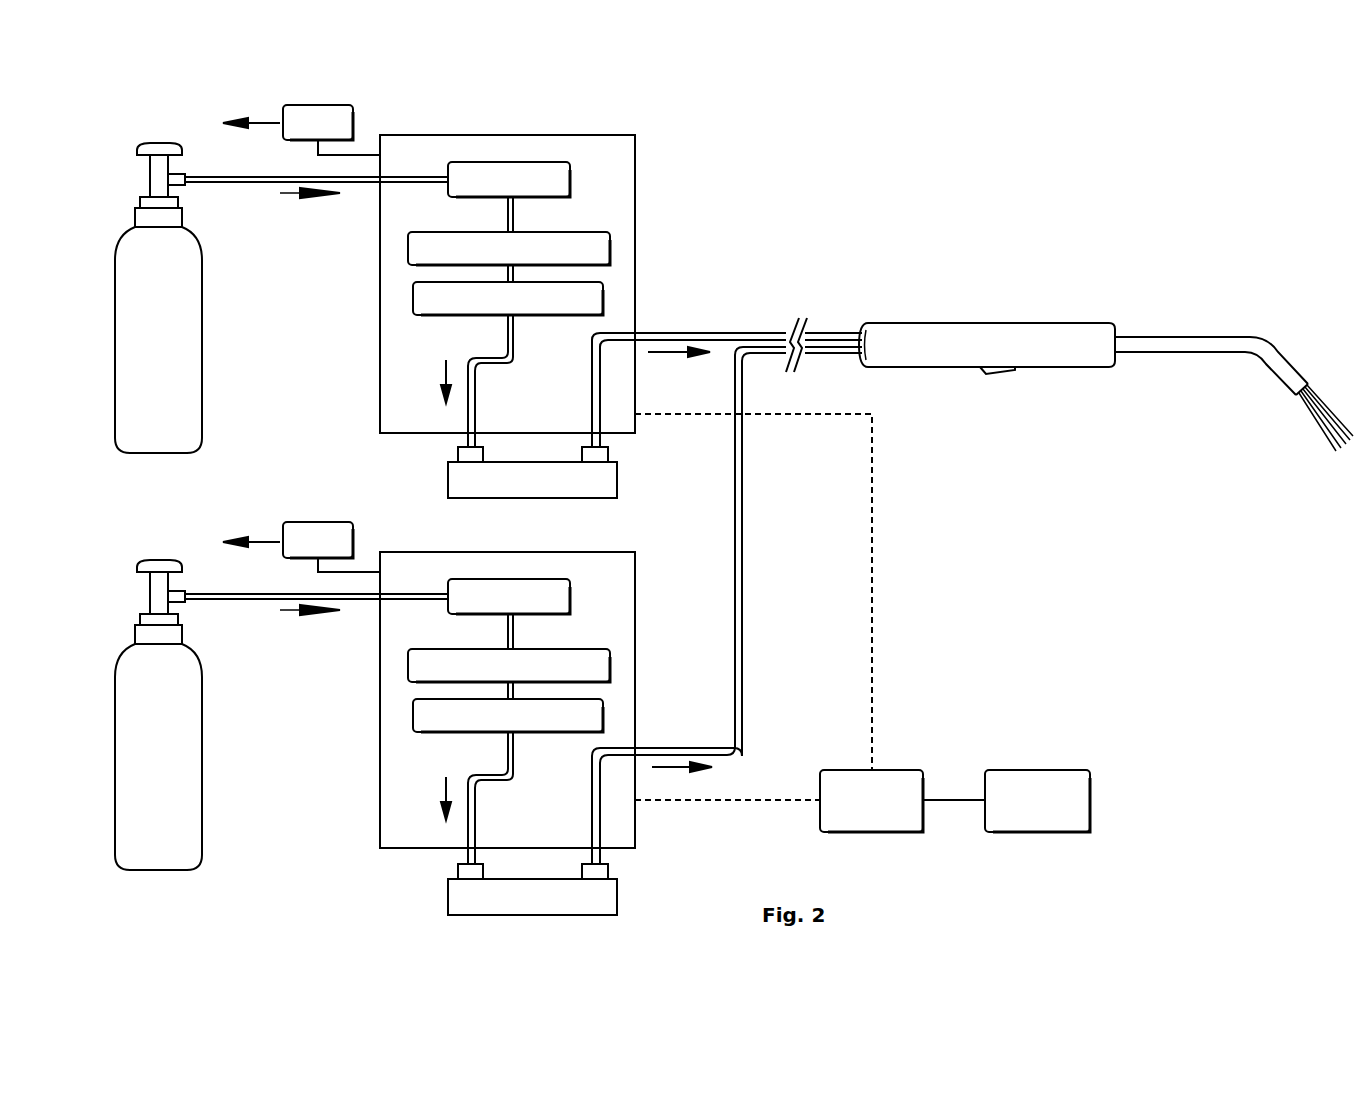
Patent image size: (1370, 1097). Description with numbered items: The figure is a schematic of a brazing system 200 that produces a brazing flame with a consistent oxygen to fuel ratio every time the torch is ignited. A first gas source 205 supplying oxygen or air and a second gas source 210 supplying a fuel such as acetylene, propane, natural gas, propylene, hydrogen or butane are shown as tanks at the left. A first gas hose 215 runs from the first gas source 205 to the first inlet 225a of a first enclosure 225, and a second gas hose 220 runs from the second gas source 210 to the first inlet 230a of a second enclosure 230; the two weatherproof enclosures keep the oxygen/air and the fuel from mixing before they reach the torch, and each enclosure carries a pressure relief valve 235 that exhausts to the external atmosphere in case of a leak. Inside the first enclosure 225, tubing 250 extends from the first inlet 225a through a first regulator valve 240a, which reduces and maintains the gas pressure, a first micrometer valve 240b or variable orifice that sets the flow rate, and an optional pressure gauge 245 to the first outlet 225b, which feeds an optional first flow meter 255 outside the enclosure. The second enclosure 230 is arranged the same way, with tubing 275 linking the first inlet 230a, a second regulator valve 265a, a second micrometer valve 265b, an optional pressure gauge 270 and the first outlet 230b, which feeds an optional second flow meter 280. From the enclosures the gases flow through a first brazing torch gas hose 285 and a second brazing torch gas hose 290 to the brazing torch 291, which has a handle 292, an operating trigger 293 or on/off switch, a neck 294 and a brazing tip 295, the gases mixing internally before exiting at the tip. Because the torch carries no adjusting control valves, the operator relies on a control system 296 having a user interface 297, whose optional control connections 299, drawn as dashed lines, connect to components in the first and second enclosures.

The brazing system 200 is at (833, 291).
The first gas source 205 is at (202, 331).
The second gas source 210 is at (202, 748).
The first gas hose 215 is at (243, 188).
The second gas hose 220 is at (243, 605).
The first enclosure 225 is at (495, 135).
The first inlet 225a is at (377, 188).
The first outlet 225b is at (468, 433).
The second enclosure 230 is at (495, 552).
The first inlet 230a is at (377, 605).
The first outlet 230b is at (468, 850).
The pressure relief valve 235 is at (353, 112).
The first regulator valve 240a is at (570, 185).
The first micrometer valve 240b is at (610, 246).
The pressure gauge 245 is at (603, 298).
The tubing 250 is at (507, 217).
The first flow meter 255 is at (660, 481).
The second regulator valve 265a is at (570, 601).
The second micrometer valve 265b is at (610, 663).
The pressure gauge 270 is at (603, 715).
The tubing 275 is at (507, 634).
The second flow meter 280 is at (660, 897).
The first brazing torch gas hose 285 is at (710, 333).
The second brazing torch gas hose 290 is at (742, 545).
The brazing torch 291 is at (935, 323).
The handle 292 is at (912, 367).
The operating trigger 293 is at (990, 372).
The neck 294 is at (1155, 337).
The brazing tip 295 is at (1300, 370).
The control system 296 is at (870, 832).
The user interface 297 is at (1052, 832).
The control connections 299 is at (872, 576).